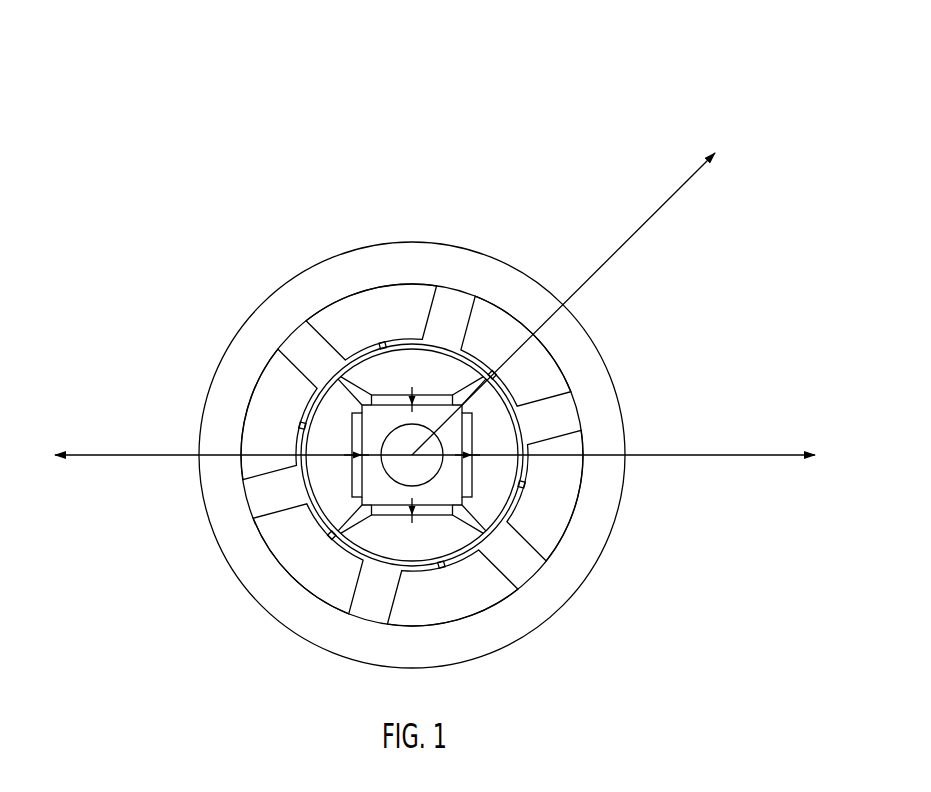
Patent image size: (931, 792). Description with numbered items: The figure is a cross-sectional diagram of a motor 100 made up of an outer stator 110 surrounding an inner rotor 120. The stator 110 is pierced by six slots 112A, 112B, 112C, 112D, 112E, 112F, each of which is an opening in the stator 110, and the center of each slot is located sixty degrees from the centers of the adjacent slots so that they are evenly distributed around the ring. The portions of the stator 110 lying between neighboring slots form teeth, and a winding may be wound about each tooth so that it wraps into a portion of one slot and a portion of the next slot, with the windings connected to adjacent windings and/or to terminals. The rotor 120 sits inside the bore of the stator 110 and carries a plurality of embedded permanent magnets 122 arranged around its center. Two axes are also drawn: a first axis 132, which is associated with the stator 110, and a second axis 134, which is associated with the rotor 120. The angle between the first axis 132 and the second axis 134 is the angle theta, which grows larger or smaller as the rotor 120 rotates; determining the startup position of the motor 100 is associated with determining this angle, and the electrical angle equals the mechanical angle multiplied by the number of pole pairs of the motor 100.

The motor 100 is at (421, 35).
The stator 110 is at (252, 310).
The slot 112A is at (572, 495).
The slot 112B is at (555, 393).
The slot 112C is at (393, 336).
The slot 112D is at (290, 442).
The slot 112E is at (330, 569).
The slot 112F is at (470, 607).
The rotor 120 is at (443, 352).
The embedded permanent magnets 122 is at (485, 522).
The first axis 132 is at (676, 459).
The second axis 134 is at (649, 221).